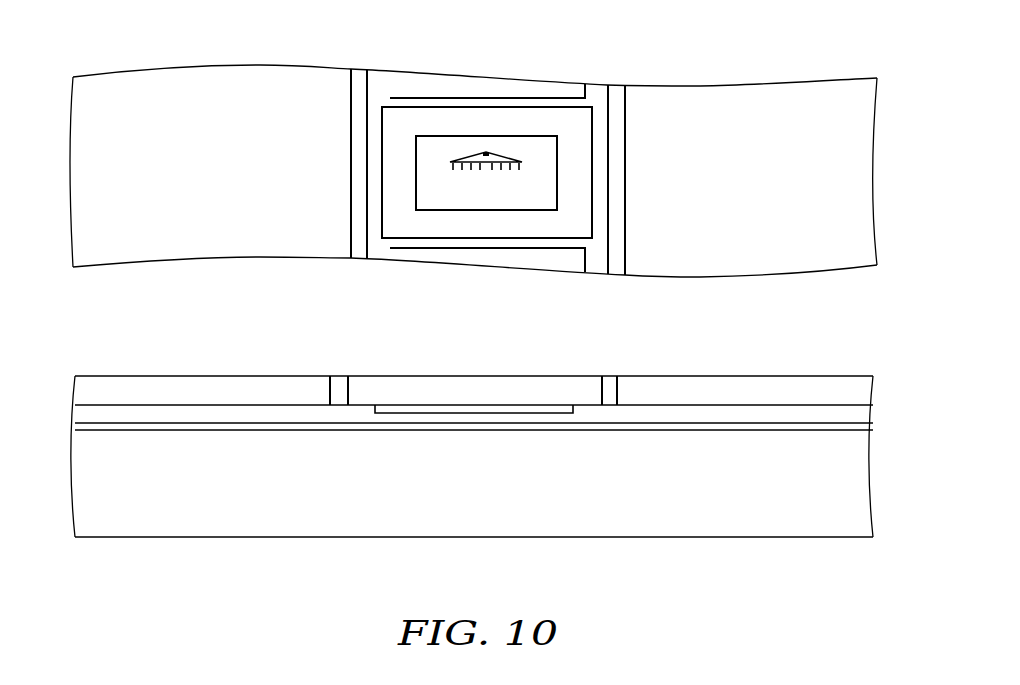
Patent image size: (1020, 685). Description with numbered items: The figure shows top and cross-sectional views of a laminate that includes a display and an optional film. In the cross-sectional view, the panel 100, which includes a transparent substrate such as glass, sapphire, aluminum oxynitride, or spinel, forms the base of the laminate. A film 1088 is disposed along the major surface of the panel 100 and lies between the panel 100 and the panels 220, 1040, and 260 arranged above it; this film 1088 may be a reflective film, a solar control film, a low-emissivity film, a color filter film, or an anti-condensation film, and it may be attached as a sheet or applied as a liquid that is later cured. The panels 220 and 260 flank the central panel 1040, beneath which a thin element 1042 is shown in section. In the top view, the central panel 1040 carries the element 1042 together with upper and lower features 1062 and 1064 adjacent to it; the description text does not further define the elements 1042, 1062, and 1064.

The panel 100 is at (815, 524).
The panel 220 is at (148, 387).
The panel 260 is at (755, 387).
The panel 1040 is at (563, 361).
The logo / marking element 1042 is at (380, 152).
The upper bar element 1062 is at (477, 99).
The lower bar element 1064 is at (492, 248).
The film 1088 is at (715, 431).